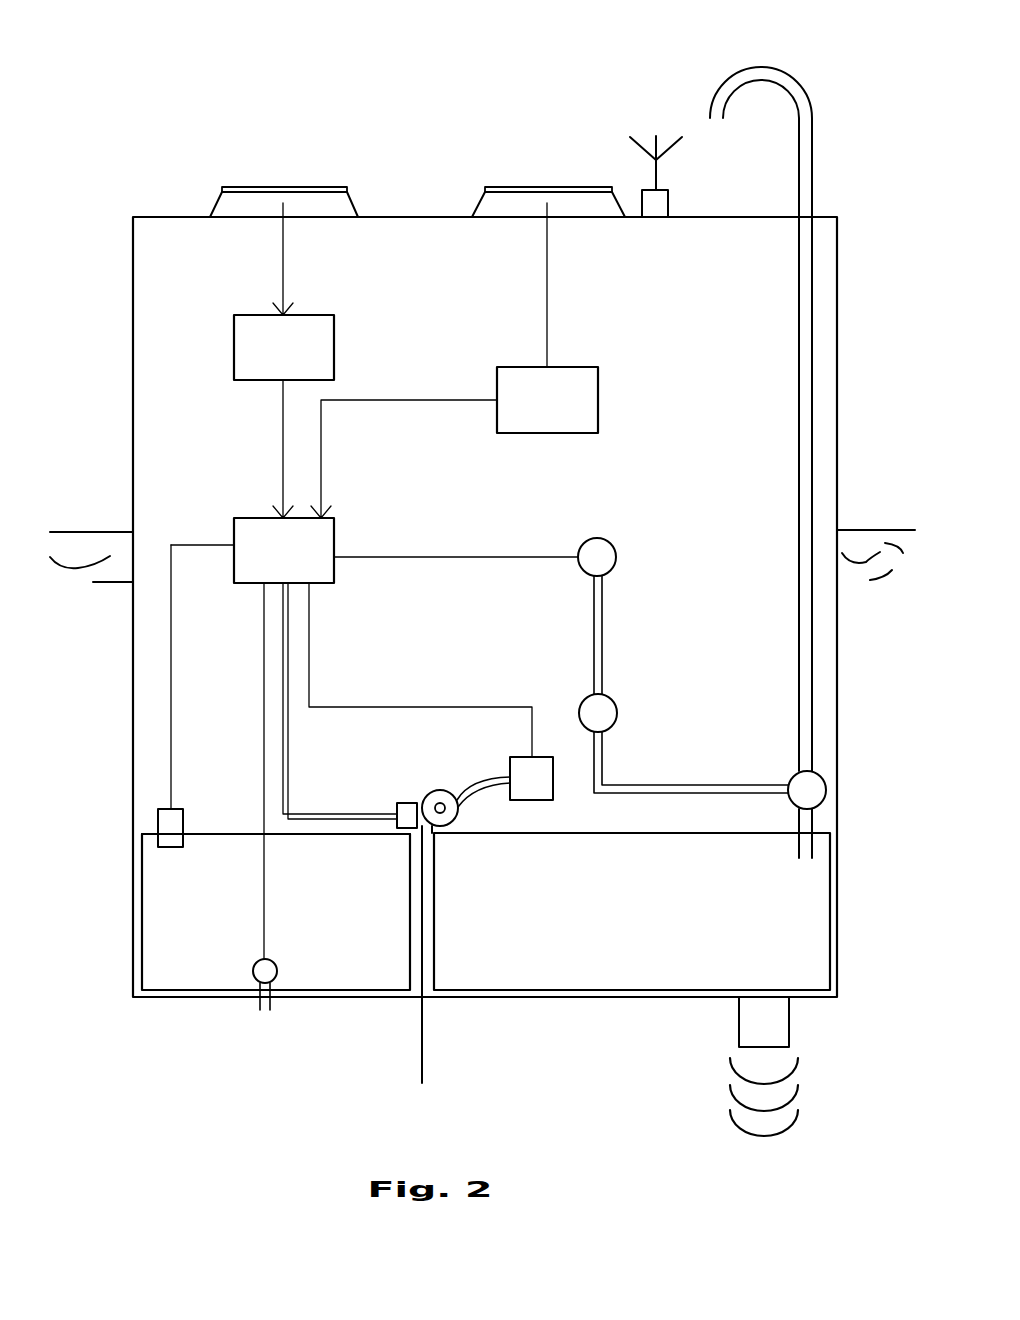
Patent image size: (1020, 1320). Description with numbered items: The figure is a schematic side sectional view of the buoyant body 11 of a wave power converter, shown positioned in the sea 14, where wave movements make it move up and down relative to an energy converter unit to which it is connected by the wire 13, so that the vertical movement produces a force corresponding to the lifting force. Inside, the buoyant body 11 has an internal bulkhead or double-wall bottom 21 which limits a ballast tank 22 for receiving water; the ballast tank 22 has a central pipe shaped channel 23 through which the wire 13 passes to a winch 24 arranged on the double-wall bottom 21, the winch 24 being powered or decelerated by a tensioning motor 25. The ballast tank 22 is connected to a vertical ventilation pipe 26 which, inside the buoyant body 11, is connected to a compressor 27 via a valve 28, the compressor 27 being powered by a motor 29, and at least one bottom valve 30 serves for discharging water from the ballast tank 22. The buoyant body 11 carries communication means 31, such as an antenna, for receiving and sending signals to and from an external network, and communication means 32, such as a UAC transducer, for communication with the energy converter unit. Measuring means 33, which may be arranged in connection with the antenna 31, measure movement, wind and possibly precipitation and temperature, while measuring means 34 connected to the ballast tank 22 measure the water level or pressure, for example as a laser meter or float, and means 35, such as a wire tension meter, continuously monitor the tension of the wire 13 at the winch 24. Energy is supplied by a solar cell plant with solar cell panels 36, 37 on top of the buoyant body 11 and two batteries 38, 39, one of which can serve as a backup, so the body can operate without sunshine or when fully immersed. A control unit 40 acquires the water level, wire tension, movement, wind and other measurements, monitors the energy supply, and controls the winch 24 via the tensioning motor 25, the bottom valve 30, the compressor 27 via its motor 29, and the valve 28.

The buoyant body 11 is at (133, 178).
The wire 13 is at (420, 1023).
The sea 14 is at (93, 528).
The double-wall bottom 21 is at (237, 832).
The ballast tank 22 is at (183, 928).
The pipe shaped channel 23 is at (408, 895).
The winch 24 is at (427, 793).
The tensioning motor 25 is at (538, 792).
The ventilation pipe 26 is at (807, 290).
The compressor 27 is at (618, 703).
The valve 28 is at (807, 790).
The motor 29 is at (585, 538).
The bottom valve 30 is at (255, 983).
The communication means 31 is at (643, 138).
The communication means 32 is at (790, 1020).
The measuring means 33 is at (660, 200).
The measuring means 34 is at (170, 832).
The wire tension measuring means 35 is at (397, 810).
The solar cell panel 36 is at (258, 185).
The solar cell panel 37 is at (545, 183).
The battery 38 is at (258, 355).
The battery 39 is at (585, 382).
The control unit 40 is at (250, 535).